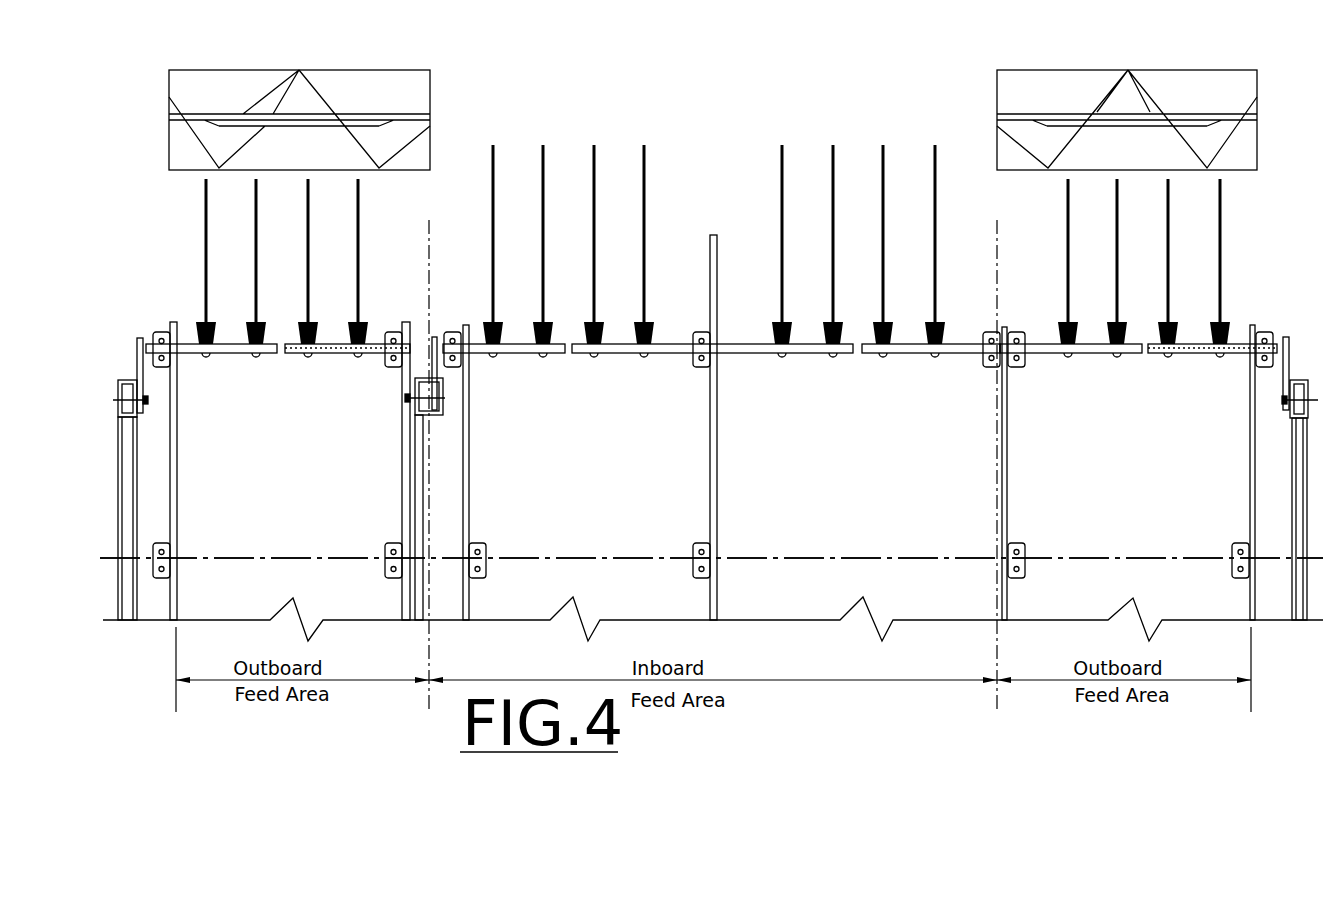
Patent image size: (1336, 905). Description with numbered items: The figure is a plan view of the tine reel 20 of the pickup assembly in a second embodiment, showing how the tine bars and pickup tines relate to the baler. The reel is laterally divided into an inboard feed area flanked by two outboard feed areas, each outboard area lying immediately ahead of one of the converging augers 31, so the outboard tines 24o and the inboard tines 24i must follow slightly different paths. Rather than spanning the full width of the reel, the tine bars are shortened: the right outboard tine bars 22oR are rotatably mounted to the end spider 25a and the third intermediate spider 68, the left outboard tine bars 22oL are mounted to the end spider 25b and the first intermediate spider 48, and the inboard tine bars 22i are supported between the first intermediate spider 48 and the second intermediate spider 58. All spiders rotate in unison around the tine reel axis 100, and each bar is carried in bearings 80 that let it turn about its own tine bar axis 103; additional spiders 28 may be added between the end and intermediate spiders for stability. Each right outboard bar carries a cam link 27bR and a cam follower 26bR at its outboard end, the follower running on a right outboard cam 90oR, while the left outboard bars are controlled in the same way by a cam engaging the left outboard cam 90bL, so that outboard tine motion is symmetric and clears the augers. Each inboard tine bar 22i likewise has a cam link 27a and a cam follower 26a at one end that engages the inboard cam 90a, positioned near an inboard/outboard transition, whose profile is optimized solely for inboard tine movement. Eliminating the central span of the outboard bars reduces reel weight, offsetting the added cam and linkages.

The tine reel 20 is at (606, 98).
The converging augers 31 is at (420, 93).
The outboard tines 24o is at (360, 272).
The inboard tines 24i is at (785, 205).
The right outboard tine bars 22oR is at (228, 355).
The left outboard tine bars 22oL is at (1100, 355).
The inboard tine bars 22i is at (555, 357).
The tine bar axis 103 is at (330, 355).
The right outboard post 90oR is at (132, 474).
The cam follower 26bR is at (127, 395).
The cam link 27bR is at (140, 337).
The end spider 25a is at (178, 590).
The third intermediate spider 68 is at (400, 582).
The inboard cam 90a is at (424, 452).
The cam follower 26a is at (425, 410).
The cam link 27a is at (437, 372).
The second intermediate spider 58 is at (468, 585).
The inboard tine spider 28 is at (713, 513).
The bearings 80 is at (703, 330).
The tine reel axis 100 is at (807, 557).
The first intermediate spider 48 is at (1007, 497).
The end spider 25b is at (1248, 607).
The left outboard cam 90bL is at (1297, 432).